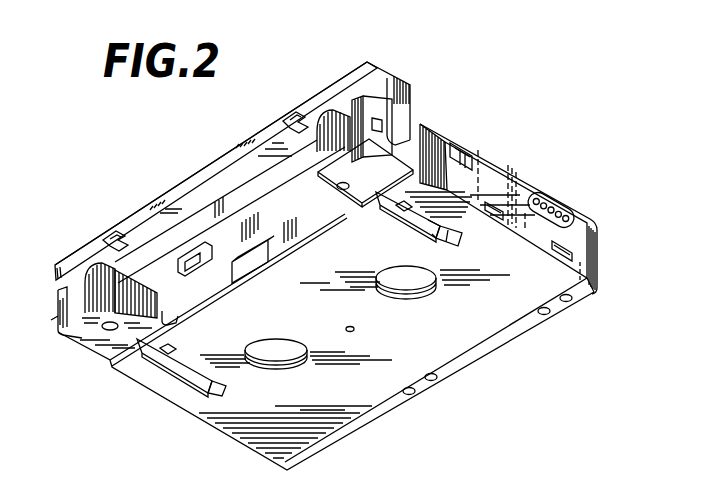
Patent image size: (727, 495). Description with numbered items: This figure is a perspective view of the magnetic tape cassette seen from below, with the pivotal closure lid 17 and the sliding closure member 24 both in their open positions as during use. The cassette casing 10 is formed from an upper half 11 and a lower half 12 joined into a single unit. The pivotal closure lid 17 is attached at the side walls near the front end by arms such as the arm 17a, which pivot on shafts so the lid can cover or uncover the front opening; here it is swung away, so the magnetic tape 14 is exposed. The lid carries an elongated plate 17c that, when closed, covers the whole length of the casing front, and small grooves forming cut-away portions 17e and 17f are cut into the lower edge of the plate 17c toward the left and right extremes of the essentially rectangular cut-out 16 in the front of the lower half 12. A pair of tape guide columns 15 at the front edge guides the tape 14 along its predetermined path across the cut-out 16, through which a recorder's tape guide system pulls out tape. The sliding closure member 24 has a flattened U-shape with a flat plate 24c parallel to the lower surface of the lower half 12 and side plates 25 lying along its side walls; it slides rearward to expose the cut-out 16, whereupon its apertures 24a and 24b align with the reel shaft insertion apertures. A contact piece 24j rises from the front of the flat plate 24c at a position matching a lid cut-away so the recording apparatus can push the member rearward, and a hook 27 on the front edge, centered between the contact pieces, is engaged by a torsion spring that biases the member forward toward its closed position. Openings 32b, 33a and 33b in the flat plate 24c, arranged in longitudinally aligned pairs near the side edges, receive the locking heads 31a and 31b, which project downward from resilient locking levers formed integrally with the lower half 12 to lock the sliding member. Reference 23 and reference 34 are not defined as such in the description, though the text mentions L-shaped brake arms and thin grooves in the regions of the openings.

The cassette casing 10 is at (519, 117).
The upper half 11 is at (590, 233).
The lower half 12 is at (600, 273).
The magnetic tape 14 is at (193, 222).
The tape guide columns 15 is at (331, 112).
The cut-out 16 is at (305, 228).
The pivotal closure lid 17 is at (230, 148).
The arm 17a is at (398, 112).
The plate 17c is at (207, 187).
The cut-away portion 17e is at (292, 112).
The cut-away portion 17f is at (115, 229).
The bracket 23 is at (396, 148).
The sliding closure member 24 is at (166, 392).
The aperture 24a is at (413, 304).
The aperture 24b is at (292, 366).
The flat plate 24c is at (381, 382).
The contact piece 24j is at (174, 327).
The side plates 25 is at (477, 198).
The hook 27 is at (246, 265).
The locking head 31a is at (397, 210).
The locking head 31b is at (176, 352).
The opening 32b is at (162, 358).
The opening 33a is at (448, 246).
The opening 33b is at (224, 388).
The arm end 34 is at (460, 240).